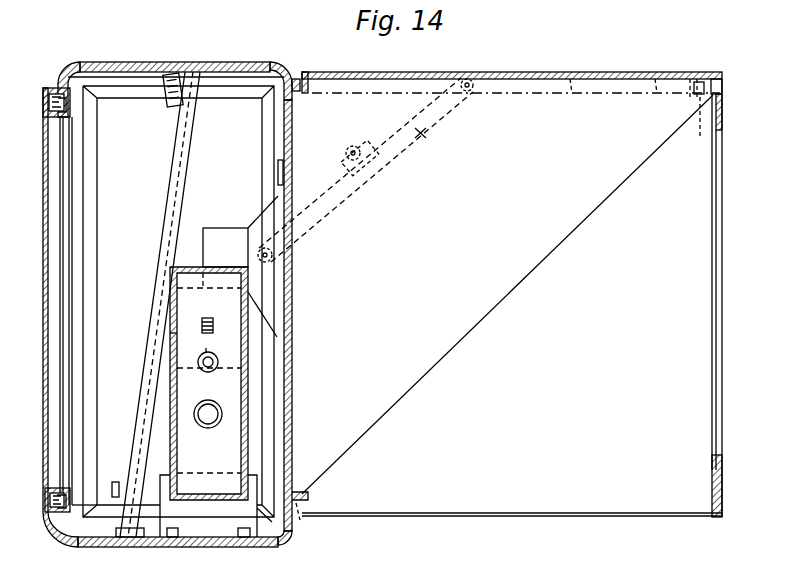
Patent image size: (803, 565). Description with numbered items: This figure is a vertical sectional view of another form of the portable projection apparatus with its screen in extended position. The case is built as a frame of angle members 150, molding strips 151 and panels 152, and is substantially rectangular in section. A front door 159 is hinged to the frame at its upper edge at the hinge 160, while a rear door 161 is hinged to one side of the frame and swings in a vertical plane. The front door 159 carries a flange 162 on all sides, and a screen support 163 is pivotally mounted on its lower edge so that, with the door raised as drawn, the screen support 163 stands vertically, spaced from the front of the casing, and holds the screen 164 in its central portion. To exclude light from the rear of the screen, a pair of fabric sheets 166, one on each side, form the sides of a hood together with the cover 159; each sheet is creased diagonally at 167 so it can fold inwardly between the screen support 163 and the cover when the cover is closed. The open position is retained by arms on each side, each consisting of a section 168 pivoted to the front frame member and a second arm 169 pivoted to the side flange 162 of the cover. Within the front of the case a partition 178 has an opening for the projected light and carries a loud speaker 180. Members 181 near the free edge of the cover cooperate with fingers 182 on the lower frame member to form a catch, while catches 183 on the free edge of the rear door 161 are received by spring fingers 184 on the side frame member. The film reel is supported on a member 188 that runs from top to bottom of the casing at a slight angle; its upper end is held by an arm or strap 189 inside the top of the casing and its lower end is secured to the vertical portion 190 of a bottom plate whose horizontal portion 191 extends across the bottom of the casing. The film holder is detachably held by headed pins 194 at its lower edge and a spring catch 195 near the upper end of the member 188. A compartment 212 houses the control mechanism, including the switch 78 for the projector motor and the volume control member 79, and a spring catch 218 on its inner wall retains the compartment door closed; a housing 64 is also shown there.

The angle member 150 is at (92, 70).
The molding strip 151 is at (76, 70).
The panel 152 is at (148, 63).
The front door 159 is at (560, 73).
The hinge 160 is at (300, 69).
The rear door 161 is at (42, 312).
The flange 162 is at (724, 86).
The screen support 163 is at (724, 478).
The screen 164 is at (717, 302).
The fabric sheet 166 is at (493, 503).
The diagonal crease 167 is at (505, 297).
The arm section 168 is at (365, 170).
The second arm 169 is at (426, 138).
The partition 178 is at (287, 387).
The loud speaker 180 is at (227, 237).
The member 181 is at (687, 123).
The clip or finger 182 is at (300, 514).
The catch 183 is at (46, 108).
The spring finger 184 is at (62, 115).
The member 188 is at (168, 232).
The arm or strap 189 is at (222, 78).
The vertical portion of plate 190 is at (118, 538).
The horizontal portion of plate 191 is at (98, 542).
The headed pin 194 is at (115, 480).
The spring catch 195 is at (177, 110).
The compartment 212 is at (182, 334).
The spring catch 218 is at (209, 318).
The housing 64 is at (255, 445).
The switch 78 is at (211, 359).
The volume control member 79 is at (212, 400).